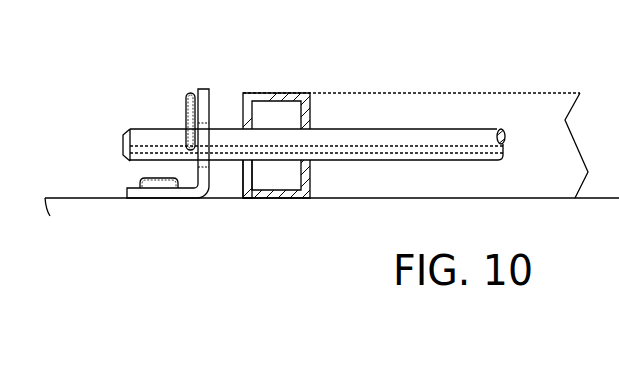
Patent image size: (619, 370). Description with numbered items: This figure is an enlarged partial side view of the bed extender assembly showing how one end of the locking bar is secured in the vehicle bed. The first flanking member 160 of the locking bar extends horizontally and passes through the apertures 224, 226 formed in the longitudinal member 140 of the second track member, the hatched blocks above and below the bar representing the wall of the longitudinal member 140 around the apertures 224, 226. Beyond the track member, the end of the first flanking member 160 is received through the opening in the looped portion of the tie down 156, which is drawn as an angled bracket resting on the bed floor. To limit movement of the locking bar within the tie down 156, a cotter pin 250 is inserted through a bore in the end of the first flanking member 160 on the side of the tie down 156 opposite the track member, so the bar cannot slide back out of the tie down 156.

The first longitudinal member 140 is at (272, 93).
The tie down 156 is at (203, 89).
The first flanking member 160 is at (390, 138).
The aperture 224 is at (278, 198).
The aperture 226 is at (240, 162).
The cotter pin 250 is at (191, 112).